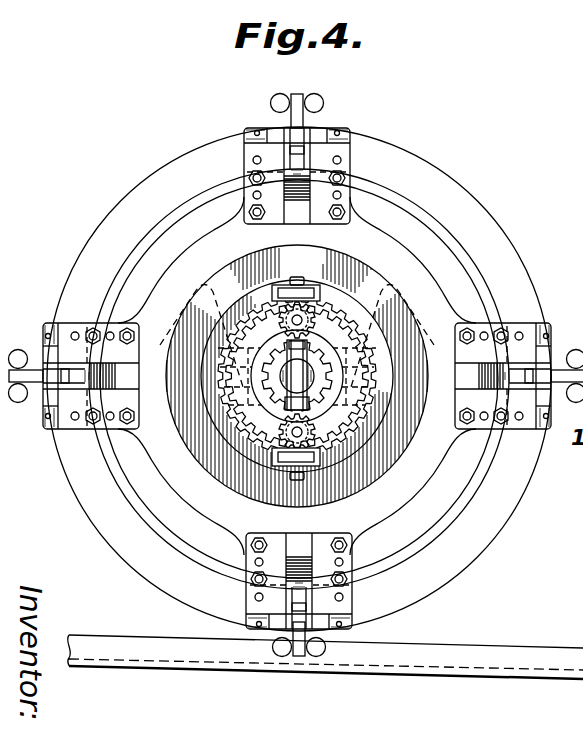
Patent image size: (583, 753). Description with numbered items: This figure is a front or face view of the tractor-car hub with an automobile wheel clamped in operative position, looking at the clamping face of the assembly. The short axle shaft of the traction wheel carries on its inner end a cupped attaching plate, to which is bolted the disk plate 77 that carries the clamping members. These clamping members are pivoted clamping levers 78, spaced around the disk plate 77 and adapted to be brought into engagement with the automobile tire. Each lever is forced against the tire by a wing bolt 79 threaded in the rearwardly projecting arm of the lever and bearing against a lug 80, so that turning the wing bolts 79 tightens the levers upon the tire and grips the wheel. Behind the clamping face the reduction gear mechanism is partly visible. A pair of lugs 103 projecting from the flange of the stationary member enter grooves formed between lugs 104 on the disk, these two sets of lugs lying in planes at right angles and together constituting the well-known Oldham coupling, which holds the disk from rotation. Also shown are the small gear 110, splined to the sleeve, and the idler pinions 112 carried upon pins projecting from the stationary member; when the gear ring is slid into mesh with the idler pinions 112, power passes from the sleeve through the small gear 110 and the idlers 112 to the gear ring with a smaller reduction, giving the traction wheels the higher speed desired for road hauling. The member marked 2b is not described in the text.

The disk plate 77 is at (187, 257).
The pivoted clamping lever 78 is at (272, 118).
The wing bolt 79 is at (325, 180).
The lug 80 is at (312, 200).
The lugs 103 is at (190, 323).
The lugs 104 is at (214, 293).
The small gear 110 is at (200, 437).
The idler pinions 112 is at (340, 288).
The rail 2b is at (545, 655).